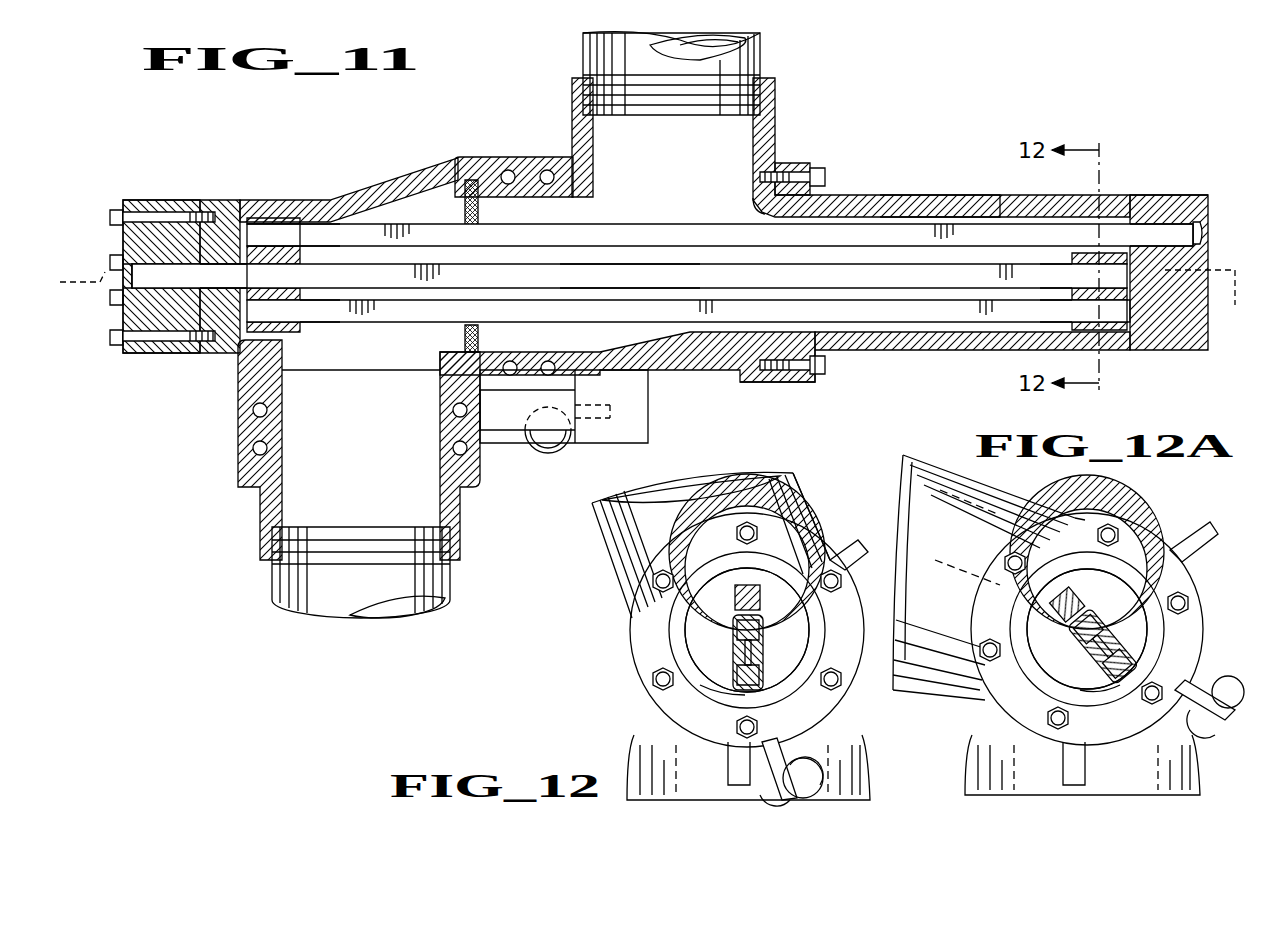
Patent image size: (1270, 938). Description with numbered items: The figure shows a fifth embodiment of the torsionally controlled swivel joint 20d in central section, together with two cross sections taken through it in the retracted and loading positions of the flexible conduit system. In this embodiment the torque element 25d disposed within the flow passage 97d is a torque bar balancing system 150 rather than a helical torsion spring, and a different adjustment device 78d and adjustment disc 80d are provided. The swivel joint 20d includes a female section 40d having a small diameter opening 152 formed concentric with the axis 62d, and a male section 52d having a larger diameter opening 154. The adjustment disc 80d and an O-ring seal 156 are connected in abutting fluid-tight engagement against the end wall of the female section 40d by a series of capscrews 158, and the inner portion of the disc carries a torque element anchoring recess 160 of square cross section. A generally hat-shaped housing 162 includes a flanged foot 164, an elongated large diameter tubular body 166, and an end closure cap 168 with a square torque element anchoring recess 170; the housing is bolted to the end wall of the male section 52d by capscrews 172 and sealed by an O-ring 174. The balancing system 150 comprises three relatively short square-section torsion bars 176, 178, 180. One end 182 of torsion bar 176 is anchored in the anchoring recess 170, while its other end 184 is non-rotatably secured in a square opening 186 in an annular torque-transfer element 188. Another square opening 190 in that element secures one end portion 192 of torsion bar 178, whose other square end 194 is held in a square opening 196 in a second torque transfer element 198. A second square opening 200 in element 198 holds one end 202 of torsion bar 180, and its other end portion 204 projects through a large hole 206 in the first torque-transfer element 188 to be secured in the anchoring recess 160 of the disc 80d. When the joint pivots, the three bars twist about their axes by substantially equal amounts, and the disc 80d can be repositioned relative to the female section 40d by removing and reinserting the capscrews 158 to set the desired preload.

In FIG. 11, the torsionally controlled swivel joint 20d is at (880, 40).
In FIG. 12, the torsionally controlled swivel joint 20d is at (815, 497).
In FIG. 12A, the torsionally controlled swivel joint 20d is at (1165, 505).
In FIG. 11, the torque element 25d is at (879, 215).
In FIG. 11, the female section 40d is at (500, 152).
In FIG. 12, the female section 40d is at (655, 705).
In FIG. 12A, the female section 40d is at (990, 705).
In FIG. 11, the male section 52d is at (775, 94).
In FIG. 12, the male section 52d is at (617, 572).
In FIG. 12A, the male section 52d is at (1037, 490).
In FIG. 11, the axis 62d is at (649, 287).
In FIG. 11, the adjustment device 78d is at (175, 200).
In FIG. 11, the adjustment disc 80d is at (152, 200).
In FIG. 11, the flow passage 97d is at (690, 198).
In FIG. 11, the torque bar balancing system 150 is at (910, 262).
In FIG. 12, the torque bar balancing system 150 is at (717, 597).
In FIG. 12A, the torque bar balancing system 150 is at (1105, 597).
In FIG. 11, the small diameter opening 152 is at (225, 262).
In FIG. 11, the larger diameter opening 154 is at (755, 216).
In FIG. 11, the O-ring seal 156 is at (205, 305).
In FIG. 11, the capscrews 158 is at (112, 337).
In FIG. 11, the torque element anchoring recess 160 is at (133, 272).
In FIG. 11, the hat-shaped housing 162 is at (1128, 193).
In FIG. 12, the hat-shaped housing 162 is at (805, 565).
In FIG. 12A, the hat-shaped housing 162 is at (1155, 582).
In FIG. 11, the flanged foot 164 is at (797, 162).
In FIG. 12, the flanged foot 164 is at (715, 535).
In FIG. 12A, the flanged foot 164 is at (1175, 585).
In FIG. 11, the tubular body 166 is at (895, 343).
In FIG. 12, the tubular body 166 is at (778, 698).
In FIG. 12A, the tubular body 166 is at (1160, 630).
In FIG. 11, the end closure cap 168 is at (1168, 195).
In FIG. 11, the torque element anchoring recess 170 is at (1190, 198).
In FIG. 11, the capscrews 172 is at (822, 176).
In FIG. 12, the capscrews 172 is at (650, 650).
In FIG. 12A, the capscrews 172 is at (985, 650).
In FIG. 11, the O-ring 174 is at (782, 205).
In FIG. 11, the torsion bar 176 is at (548, 233).
In FIG. 12, the torsion bar 176 is at (750, 585).
In FIG. 11, the torsion bar 178 is at (608, 322).
In FIG. 12, the torsion bar 178 is at (762, 670).
In FIG. 11, the torsion bar 180 is at (610, 270).
In FIG. 12, the torsion bar 180 is at (770, 613).
In FIG. 11, the end of torsion bar 182 is at (1172, 243).
In FIG. 11, the other end of bar 184 is at (276, 244).
In FIG. 11, the square opening 186 is at (292, 232).
In FIG. 11, the torque-transfer element 188 is at (280, 218).
In FIG. 11, the square opening 190 is at (292, 306).
In FIG. 11, the end portion of torsion bar 192 is at (275, 320).
In FIG. 11, the square end 194 is at (1115, 315).
In FIG. 11, the square opening 196 is at (1072, 301).
In FIG. 12, the square opening 196 is at (703, 690).
In FIG. 12A, the square opening 196 is at (1110, 690).
In FIG. 11, the second torque transfer element 198 is at (1118, 330).
In FIG. 12, the second torque transfer element 198 is at (770, 632).
In FIG. 11, the second square opening 200 is at (1072, 266).
In FIG. 12, the second square opening 200 is at (740, 625).
In FIG. 11, the end of torsion bar 202 is at (1115, 278).
In FIG. 11, the other end portion 204 is at (192, 285).
In FIG. 11, the large hole 206 is at (292, 266).